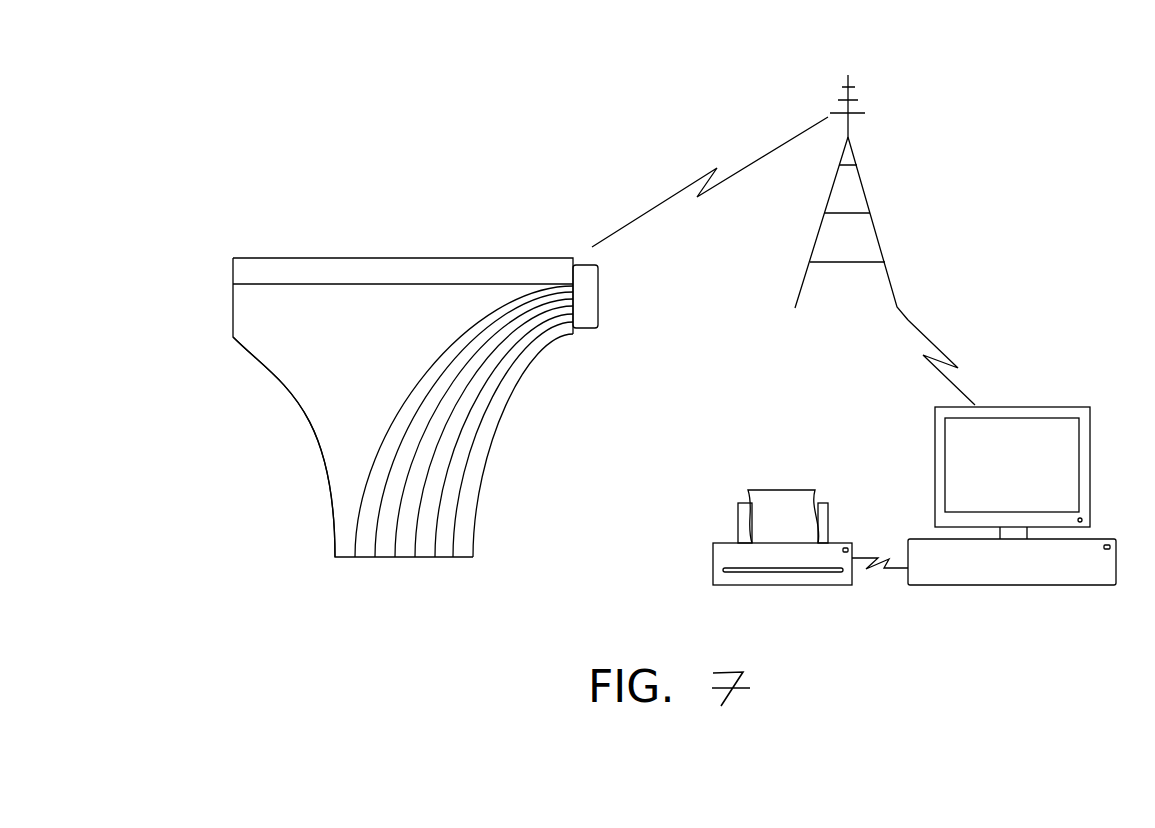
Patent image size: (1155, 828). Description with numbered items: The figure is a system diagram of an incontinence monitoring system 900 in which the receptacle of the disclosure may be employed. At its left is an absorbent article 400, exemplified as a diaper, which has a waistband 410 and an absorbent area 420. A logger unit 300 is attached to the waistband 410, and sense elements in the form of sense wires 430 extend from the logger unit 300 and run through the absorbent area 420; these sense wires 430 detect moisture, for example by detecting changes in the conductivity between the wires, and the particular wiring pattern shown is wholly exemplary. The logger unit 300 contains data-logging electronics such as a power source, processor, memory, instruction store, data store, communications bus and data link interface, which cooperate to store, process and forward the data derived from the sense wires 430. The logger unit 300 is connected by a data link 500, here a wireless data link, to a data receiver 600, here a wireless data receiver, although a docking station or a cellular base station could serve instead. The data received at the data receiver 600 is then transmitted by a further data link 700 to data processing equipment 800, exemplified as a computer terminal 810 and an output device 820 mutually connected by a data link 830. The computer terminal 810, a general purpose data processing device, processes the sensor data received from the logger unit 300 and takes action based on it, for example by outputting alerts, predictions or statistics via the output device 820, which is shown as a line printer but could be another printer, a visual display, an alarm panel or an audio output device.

The logger unit 300 is at (598, 336).
The absorbent article 400 is at (222, 281).
The waistband 410 is at (418, 264).
The absorbent area 420 is at (318, 385).
The sense wires 430 is at (472, 562).
The data link 500 is at (762, 157).
The data receiver 600 is at (877, 235).
The further data link 700 is at (935, 345).
The data processing equipment 800 is at (885, 634).
The computer terminal 810 is at (1013, 586).
The output device 820 is at (778, 586).
The data link 830 is at (877, 556).
The monitoring system 900 is at (1045, 82).